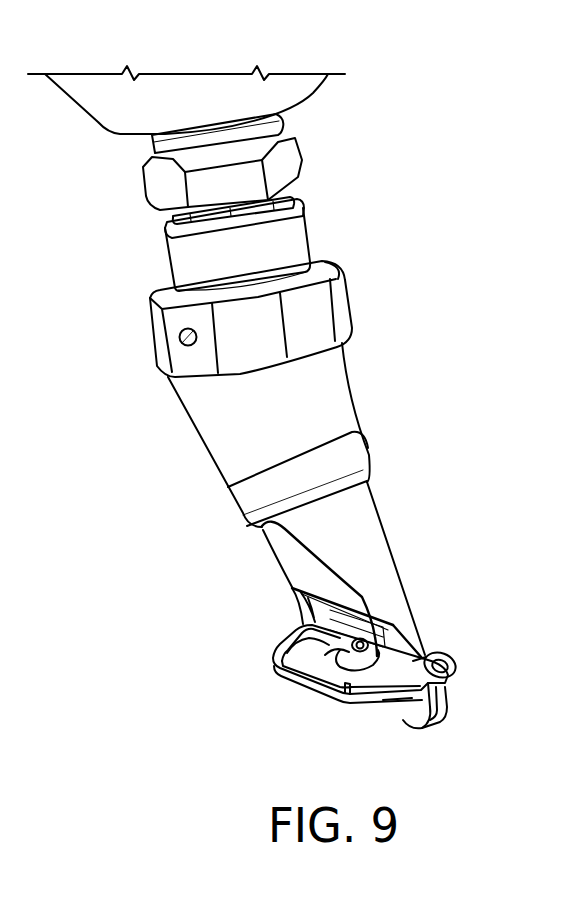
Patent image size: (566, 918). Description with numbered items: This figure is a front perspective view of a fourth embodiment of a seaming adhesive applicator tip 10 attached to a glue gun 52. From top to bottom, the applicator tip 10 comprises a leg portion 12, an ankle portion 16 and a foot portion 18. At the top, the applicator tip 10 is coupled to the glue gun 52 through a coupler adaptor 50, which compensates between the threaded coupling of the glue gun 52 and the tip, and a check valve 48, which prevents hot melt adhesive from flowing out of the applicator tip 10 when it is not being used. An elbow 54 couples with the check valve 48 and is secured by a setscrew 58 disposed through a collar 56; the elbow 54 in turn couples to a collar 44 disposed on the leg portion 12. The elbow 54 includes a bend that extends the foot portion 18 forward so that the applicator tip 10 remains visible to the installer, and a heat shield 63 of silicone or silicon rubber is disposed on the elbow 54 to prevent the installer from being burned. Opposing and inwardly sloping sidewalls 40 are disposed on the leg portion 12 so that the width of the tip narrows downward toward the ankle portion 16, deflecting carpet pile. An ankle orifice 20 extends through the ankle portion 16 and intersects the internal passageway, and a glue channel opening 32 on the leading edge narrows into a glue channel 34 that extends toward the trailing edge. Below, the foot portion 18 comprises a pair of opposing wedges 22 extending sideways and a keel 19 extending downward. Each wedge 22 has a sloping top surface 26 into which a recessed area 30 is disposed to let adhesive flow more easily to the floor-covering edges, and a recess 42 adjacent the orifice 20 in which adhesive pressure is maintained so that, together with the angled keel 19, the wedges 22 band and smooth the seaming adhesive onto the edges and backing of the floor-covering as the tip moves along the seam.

The seaming adhesive applicator tip 10 is at (512, 410).
The leg portion 12 is at (378, 503).
The ankle portion 16 is at (443, 620).
The foot portion 18 is at (441, 740).
The keel 19 is at (392, 718).
The ankle orifice 20 is at (363, 640).
The wedge 22 is at (291, 628).
The sloping top surface 26 is at (347, 698).
The recessed area 30 is at (373, 670).
The glue channel opening 32 is at (293, 605).
The glue channel 34 is at (456, 672).
The inwardly sloping sidewall 40 is at (281, 553).
The recess 42 is at (305, 678).
The collar 44 is at (370, 452).
The check valve 48 is at (303, 227).
The coupler adaptor 50 is at (303, 150).
The glue gun 52 is at (305, 108).
The elbow 54 is at (348, 377).
The collar 56 is at (343, 297).
The setscrew 58 is at (180, 343).
The heat shield 63 is at (220, 422).